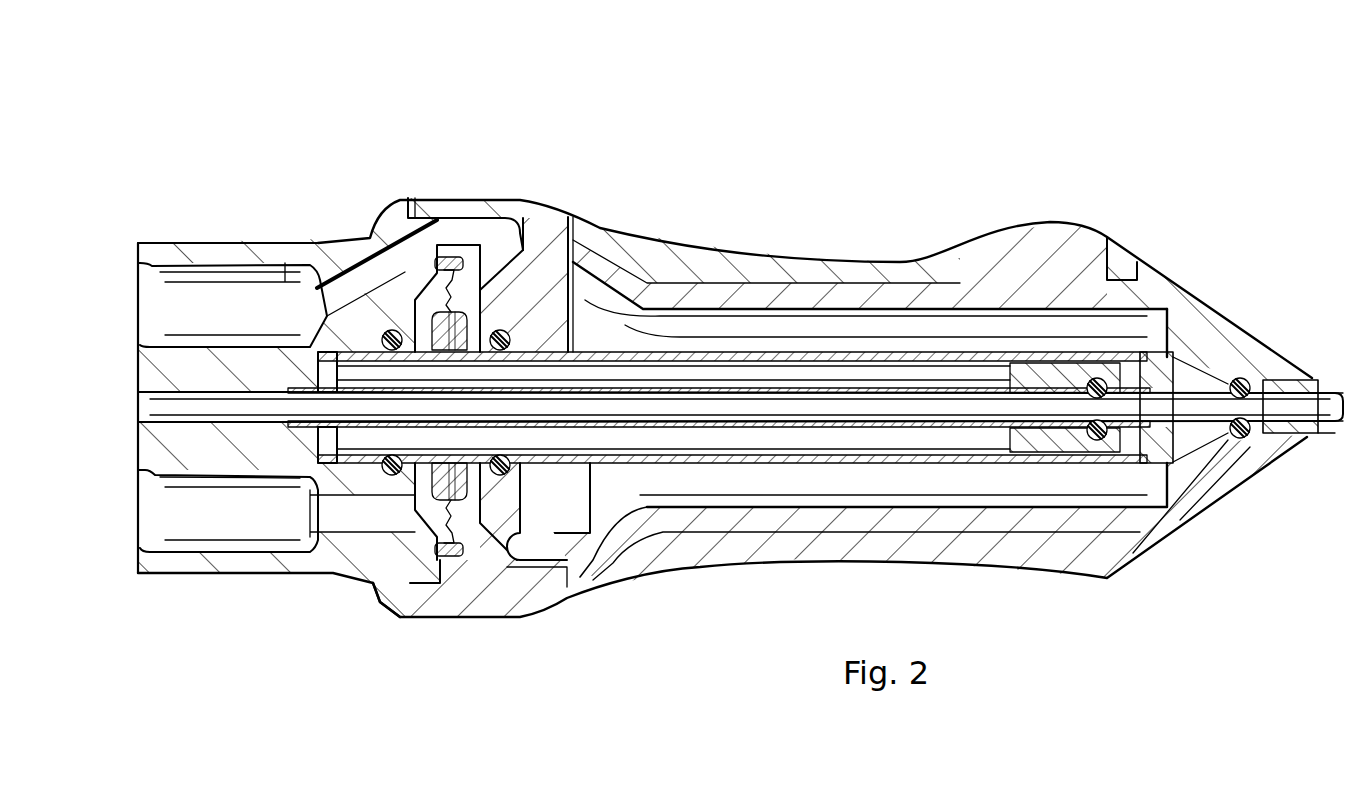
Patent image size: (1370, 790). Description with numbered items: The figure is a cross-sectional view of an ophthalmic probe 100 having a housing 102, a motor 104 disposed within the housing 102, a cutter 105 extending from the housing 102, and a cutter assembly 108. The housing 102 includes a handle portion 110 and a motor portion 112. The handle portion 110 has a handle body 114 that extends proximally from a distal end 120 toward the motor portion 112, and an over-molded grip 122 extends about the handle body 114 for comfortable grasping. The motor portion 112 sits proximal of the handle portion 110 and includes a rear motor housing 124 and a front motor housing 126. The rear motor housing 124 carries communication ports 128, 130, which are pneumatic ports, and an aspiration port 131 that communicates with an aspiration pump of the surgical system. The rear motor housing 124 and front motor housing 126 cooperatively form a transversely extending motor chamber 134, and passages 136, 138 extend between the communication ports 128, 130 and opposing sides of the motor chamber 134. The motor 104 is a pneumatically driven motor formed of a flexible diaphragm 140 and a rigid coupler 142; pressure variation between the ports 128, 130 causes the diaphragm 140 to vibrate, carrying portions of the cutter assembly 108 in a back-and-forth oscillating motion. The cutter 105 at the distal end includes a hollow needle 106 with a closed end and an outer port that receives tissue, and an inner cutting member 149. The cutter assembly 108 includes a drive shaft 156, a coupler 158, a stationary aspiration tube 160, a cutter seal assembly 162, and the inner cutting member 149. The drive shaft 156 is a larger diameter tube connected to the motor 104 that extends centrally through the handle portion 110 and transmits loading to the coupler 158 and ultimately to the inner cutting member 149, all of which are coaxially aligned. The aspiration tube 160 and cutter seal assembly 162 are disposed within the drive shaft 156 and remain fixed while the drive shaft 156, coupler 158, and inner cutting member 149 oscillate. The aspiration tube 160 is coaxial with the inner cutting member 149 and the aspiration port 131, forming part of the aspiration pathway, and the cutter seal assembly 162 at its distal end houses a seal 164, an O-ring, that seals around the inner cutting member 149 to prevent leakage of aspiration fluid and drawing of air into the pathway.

The ophthalmic probe 100 is at (1040, 92).
The housing 102 is at (472, 634).
The motor 104 is at (417, 323).
The cutter 105 is at (1330, 440).
The needle 106 is at (1321, 392).
The cutter assembly 108 is at (853, 488).
The handle portion 110 is at (688, 580).
The motor portion 112 is at (372, 608).
The handle body 114 is at (1163, 525).
The distal end 120 is at (1315, 378).
The over-molded grip 122 is at (915, 550).
The rear motor housing 124 is at (172, 578).
The front motor housing 126 is at (462, 192).
The communication port 128 is at (146, 300).
The communication port 130 is at (146, 513).
The aspiration port 131 is at (146, 408).
The motor chamber 134 is at (480, 300).
The passage 136 is at (392, 255).
The passage 138 is at (320, 516).
The flexible diaphragm 140 is at (446, 510).
The rigid coupler 142 is at (505, 540).
The inner cutting member 149 is at (1196, 415).
The drive shaft 156 is at (783, 350).
The coupler 158 is at (1202, 332).
The stationary aspiration tube 160 is at (852, 390).
The cutter seal assembly 162 is at (1025, 368).
The seal 164 is at (1095, 378).